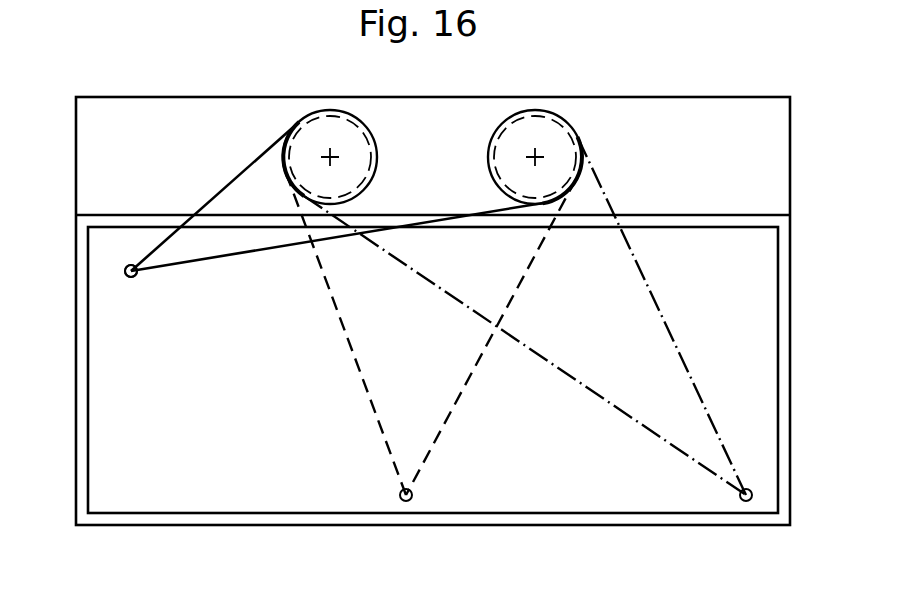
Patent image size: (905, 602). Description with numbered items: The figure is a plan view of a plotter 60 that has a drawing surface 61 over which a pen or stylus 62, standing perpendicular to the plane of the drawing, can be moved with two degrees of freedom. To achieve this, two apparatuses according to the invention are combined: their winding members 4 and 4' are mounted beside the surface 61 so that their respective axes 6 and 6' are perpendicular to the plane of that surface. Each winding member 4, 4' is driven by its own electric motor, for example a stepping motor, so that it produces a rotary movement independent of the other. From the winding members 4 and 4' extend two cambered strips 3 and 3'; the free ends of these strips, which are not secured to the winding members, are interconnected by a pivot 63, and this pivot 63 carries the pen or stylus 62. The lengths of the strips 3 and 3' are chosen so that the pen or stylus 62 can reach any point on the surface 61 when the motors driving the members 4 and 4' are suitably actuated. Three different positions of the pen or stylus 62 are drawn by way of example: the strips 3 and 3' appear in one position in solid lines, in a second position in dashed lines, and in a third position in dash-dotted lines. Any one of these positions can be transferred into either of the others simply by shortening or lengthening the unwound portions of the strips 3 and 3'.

The cambered strip 3 is at (438, 308).
The cambered strip 3' is at (438, 316).
The winding member 4 is at (330, 129).
The winding member 4' is at (535, 129).
The axis 6 is at (365, 142).
The axis 6' is at (574, 142).
The plotter 60 is at (700, 127).
The drawing surface 61 is at (578, 488).
The pen or stylus 62 is at (124, 271).
The pivot 63 is at (138, 278).